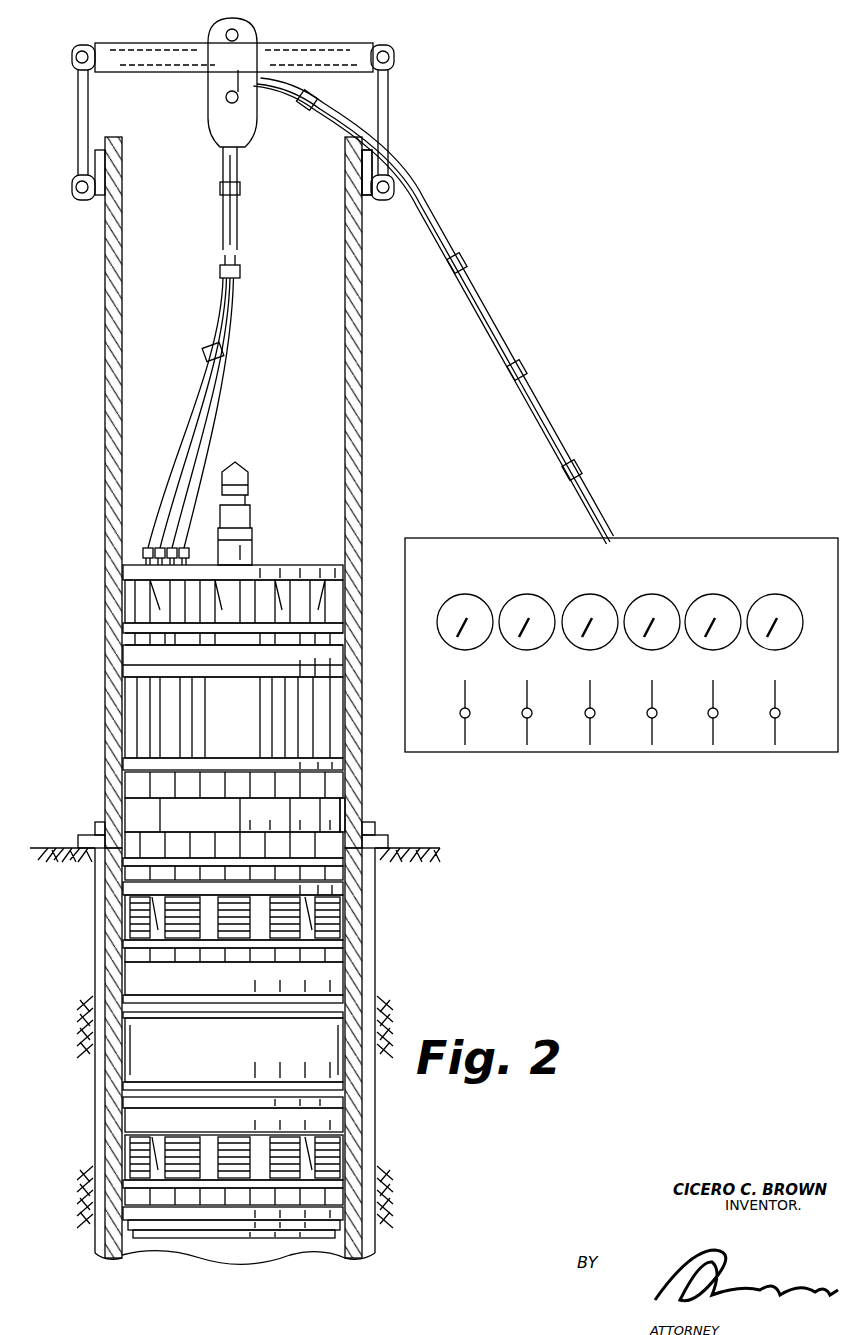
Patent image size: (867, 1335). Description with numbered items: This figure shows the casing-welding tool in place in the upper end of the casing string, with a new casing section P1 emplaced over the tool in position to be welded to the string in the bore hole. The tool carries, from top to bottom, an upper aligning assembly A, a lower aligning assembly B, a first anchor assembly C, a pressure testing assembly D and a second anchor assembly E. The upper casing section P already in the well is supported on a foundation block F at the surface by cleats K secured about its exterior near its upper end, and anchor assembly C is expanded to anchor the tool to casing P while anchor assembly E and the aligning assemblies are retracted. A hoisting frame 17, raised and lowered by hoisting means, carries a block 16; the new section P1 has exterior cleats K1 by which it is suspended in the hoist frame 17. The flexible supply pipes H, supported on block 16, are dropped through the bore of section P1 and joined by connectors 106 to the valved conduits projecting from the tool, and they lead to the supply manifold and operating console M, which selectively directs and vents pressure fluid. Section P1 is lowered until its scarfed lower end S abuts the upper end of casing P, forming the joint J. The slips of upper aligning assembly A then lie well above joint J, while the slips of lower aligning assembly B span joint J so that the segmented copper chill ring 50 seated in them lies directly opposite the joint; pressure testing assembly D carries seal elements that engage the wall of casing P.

The block 16 is at (250, 37).
The hoisting frame 17 is at (360, 44).
The exterior cleats K1 is at (368, 165).
The flexible supply pipes H is at (202, 370).
The casing section P1 is at (353, 352).
The connectors 106 is at (174, 546).
The upper aligning assembly A is at (348, 579).
The supply manifold and operating console M is at (752, 536).
The lower aligning assembly B is at (350, 767).
The chill ring 50 is at (123, 806).
The cleats K is at (95, 828).
The scarfed lower end S is at (348, 818).
The joint J is at (374, 828).
The foundation block F is at (80, 840).
The first anchor assembly C is at (348, 896).
The casing section P is at (355, 943).
The pressure testing assembly D is at (352, 1022).
The second anchor assembly E is at (343, 1135).